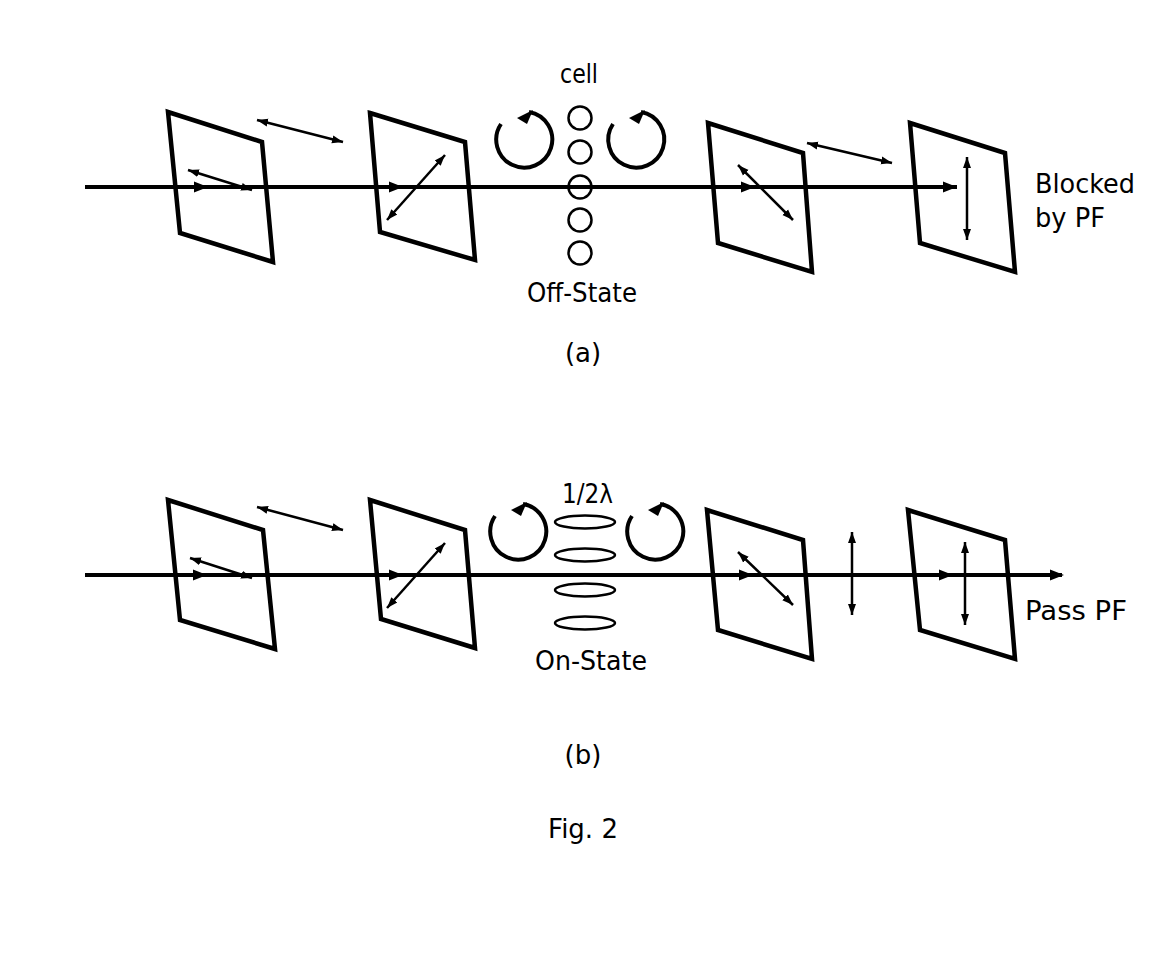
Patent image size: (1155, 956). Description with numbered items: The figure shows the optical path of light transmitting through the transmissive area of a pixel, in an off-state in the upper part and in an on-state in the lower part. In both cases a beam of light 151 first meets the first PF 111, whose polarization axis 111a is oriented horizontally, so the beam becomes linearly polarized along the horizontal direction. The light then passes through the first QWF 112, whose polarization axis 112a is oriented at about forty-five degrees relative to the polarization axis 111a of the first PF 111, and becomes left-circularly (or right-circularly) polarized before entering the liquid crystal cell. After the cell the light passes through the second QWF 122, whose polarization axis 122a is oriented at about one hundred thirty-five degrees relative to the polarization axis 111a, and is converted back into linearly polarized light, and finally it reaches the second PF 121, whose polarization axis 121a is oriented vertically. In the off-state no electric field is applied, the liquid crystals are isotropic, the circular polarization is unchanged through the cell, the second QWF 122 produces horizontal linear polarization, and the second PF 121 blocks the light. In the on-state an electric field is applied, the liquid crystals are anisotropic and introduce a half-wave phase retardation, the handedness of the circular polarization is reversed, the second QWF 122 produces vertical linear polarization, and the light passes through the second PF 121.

The beam of light 151 is at (117, 182).
The first PF 111 is at (226, 249).
The polarization axis of the first PF 111a is at (222, 183).
The first QWF 112 is at (417, 247).
The polarization axis of the first QWF 112a is at (380, 235).
The second QWF 122 is at (757, 257).
The polarization axis of the second QWF 122a is at (767, 183).
The second PF 121 is at (963, 257).
The polarization axis of the second PF 121a is at (970, 213).